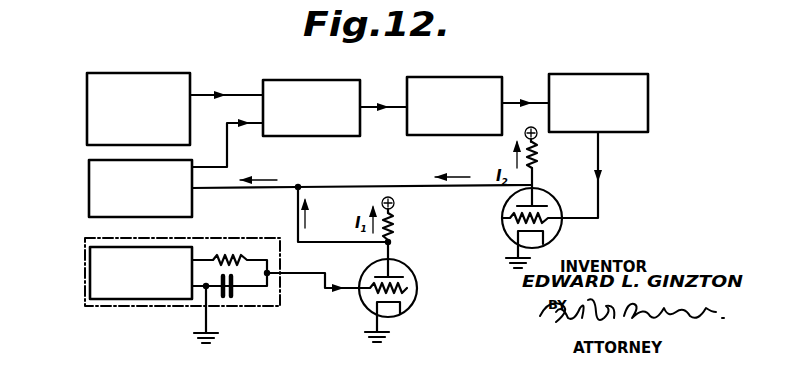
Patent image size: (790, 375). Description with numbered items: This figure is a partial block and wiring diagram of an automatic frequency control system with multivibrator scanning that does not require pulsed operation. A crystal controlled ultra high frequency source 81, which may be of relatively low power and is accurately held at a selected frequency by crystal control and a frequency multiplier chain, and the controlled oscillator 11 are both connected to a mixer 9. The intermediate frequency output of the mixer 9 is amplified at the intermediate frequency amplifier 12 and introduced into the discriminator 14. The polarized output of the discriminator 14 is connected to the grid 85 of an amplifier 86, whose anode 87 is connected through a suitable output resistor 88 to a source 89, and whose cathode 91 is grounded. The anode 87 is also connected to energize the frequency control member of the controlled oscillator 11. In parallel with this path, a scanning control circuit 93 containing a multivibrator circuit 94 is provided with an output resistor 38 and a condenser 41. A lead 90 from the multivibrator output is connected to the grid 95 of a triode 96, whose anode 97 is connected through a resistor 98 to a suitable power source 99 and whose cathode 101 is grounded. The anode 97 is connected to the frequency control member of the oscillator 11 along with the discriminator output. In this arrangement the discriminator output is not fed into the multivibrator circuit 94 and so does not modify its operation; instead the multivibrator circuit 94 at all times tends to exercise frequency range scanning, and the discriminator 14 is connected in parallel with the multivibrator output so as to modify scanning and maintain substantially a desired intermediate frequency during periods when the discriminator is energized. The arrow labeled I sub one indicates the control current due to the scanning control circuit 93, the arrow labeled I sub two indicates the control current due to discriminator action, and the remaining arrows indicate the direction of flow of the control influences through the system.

The crystal controlled ultra high frequency source 81 is at (143, 72).
The controlled oscillator 11 is at (89, 184).
The mixer 9 is at (344, 80).
The intermediate frequency amplifier 12 is at (467, 77).
The discriminator 14 is at (625, 74).
The source 89 is at (521, 137).
The output resistor 88 is at (540, 151).
The anode 87 is at (525, 218).
The grid 85 is at (502, 218).
The amplifier 86 is at (504, 236).
The grounded cathode 91 is at (557, 240).
The power source 99 is at (394, 203).
The resistor 98 is at (396, 226).
The anode 97 is at (406, 264).
The grid 95 is at (388, 292).
The triode 96 is at (365, 301).
The grounded cathode 101 is at (404, 314).
The lead 90 is at (292, 273).
The output resistor 38 is at (232, 256).
The condenser 41 is at (228, 298).
The scanning control circuit 93 is at (193, 277).
The multivibrator circuit 94 is at (148, 299).